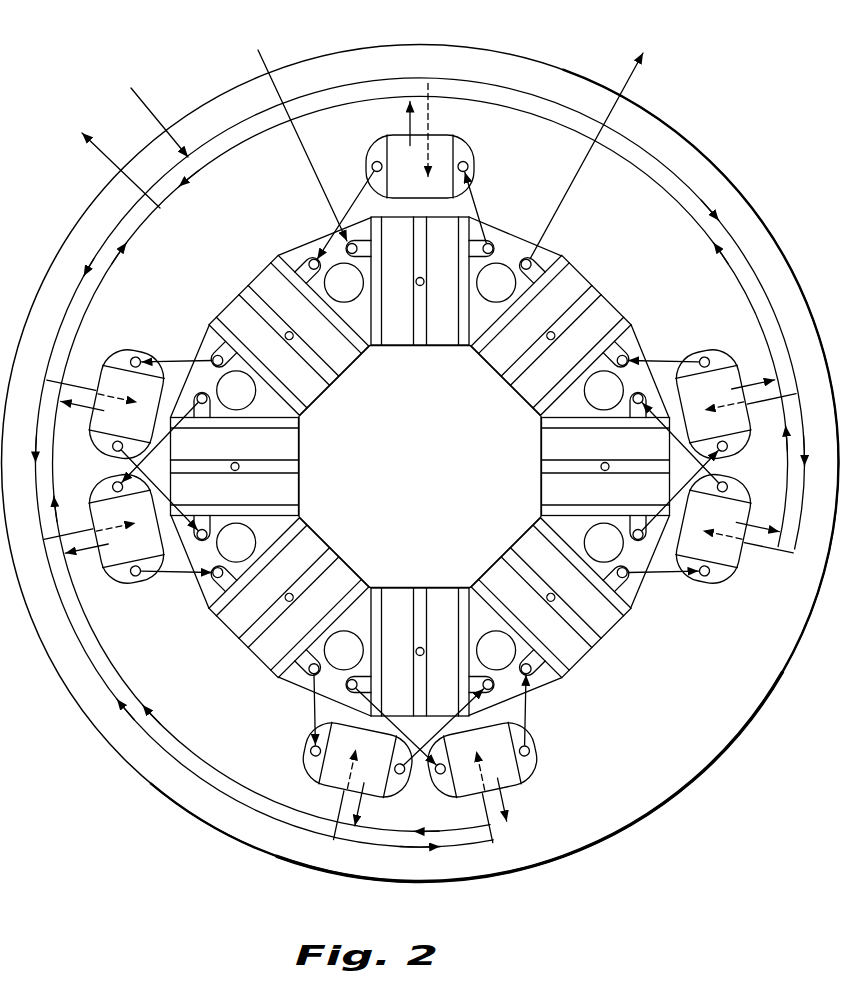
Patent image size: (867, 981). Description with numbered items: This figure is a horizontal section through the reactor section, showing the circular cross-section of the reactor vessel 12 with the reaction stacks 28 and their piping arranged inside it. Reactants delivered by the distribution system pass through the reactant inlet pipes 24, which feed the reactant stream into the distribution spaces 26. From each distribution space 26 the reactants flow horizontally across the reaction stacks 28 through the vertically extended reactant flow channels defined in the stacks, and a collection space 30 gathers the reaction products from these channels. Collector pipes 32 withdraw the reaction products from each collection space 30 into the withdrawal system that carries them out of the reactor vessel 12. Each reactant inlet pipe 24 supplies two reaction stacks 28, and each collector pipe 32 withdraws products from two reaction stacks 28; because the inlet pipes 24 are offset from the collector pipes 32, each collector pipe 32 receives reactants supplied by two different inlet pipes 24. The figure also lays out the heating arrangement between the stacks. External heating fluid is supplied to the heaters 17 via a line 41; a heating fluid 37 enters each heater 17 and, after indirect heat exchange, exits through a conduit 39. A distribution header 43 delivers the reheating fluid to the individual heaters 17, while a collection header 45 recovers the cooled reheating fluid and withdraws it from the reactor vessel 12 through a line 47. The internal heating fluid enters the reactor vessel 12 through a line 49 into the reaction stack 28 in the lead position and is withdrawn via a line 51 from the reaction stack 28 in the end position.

The reactor vessel 12 is at (198, 818).
The heater 17 is at (466, 138).
The reactant inlet pipe 24 is at (210, 362).
The distribution space 26 is at (206, 342).
The reaction stack 28 is at (330, 396).
The collection space 30 is at (302, 252).
The collector pipe 32 is at (338, 255).
The heating fluid 37 is at (84, 386).
The conduit 39 is at (80, 392).
The line 41 is at (160, 117).
The distribution header 43 is at (416, 86).
The collection header 45 is at (373, 100).
The line 47 is at (108, 162).
The line 49 is at (262, 52).
The line 51 is at (633, 80).